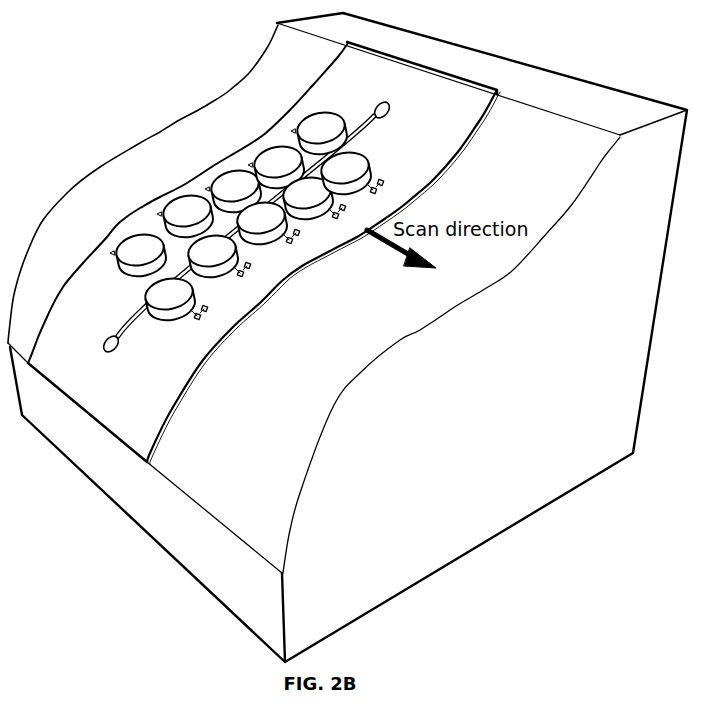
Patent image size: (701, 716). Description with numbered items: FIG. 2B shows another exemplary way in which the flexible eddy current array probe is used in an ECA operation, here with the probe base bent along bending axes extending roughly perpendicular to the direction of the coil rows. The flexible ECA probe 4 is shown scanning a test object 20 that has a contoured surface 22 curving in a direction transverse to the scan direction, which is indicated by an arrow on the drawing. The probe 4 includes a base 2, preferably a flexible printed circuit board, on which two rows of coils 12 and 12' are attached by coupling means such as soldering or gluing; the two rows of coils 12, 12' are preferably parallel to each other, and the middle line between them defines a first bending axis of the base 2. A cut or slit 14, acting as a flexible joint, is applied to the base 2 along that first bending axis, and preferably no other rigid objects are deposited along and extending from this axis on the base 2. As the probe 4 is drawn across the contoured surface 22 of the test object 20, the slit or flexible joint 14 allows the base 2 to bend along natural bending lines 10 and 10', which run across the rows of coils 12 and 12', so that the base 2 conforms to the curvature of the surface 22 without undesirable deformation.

The base 2 is at (181, 369).
The flexible ECA probe 4 is at (500, 141).
The natural bending line 10 is at (284, 251).
The natural bending line 10' is at (240, 174).
The row of coils 12 is at (247, 227).
The row of coils 12' is at (139, 262).
The slit or flexible joint 14 is at (407, 97).
The test object 20 is at (552, 483).
The contoured surface 22 is at (362, 377).